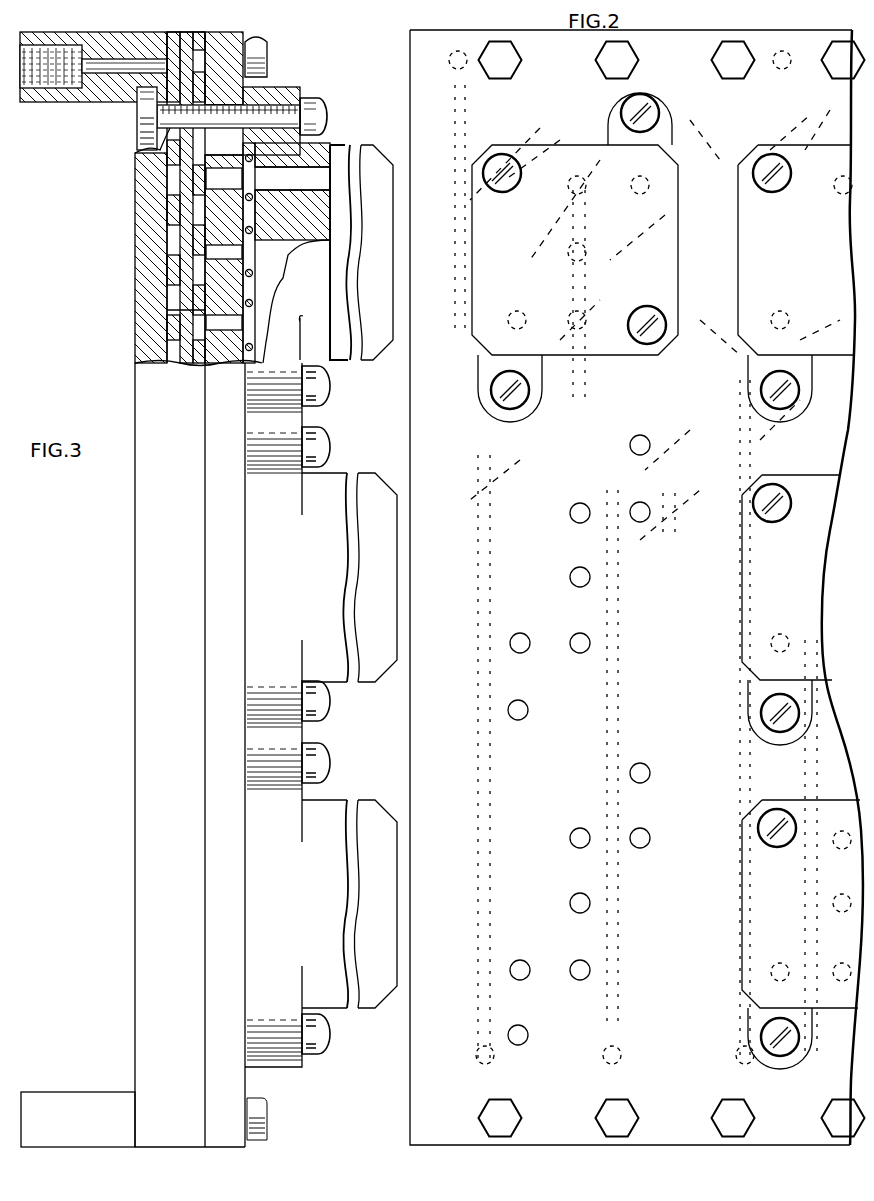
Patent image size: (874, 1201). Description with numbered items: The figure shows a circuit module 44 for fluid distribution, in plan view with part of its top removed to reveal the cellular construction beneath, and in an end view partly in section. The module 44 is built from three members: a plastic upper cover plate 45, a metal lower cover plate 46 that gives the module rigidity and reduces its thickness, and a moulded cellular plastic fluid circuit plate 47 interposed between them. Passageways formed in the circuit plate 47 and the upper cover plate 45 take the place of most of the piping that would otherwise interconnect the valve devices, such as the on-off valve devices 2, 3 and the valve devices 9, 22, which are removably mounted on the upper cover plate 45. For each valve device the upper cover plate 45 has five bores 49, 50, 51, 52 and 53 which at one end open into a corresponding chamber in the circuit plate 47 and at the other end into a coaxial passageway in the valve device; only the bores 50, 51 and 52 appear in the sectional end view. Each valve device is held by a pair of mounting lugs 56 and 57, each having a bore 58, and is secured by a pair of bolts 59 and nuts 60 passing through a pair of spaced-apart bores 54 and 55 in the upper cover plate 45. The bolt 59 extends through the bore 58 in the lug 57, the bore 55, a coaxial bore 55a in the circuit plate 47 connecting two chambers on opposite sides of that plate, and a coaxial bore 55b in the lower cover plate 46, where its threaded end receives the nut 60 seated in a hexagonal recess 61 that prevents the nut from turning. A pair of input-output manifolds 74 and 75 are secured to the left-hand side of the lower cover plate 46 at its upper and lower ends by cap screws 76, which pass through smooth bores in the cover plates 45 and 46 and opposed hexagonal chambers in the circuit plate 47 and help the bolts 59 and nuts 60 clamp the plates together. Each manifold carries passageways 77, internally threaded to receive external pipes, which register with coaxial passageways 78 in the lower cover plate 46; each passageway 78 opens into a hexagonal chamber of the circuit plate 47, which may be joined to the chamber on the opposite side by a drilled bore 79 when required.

In FIG. 3, the on-off valve device 2 is at (362, 150).
In FIG. 2, the on-off valve device 2 is at (682, 236).
In FIG. 2, the on-off valve device 3 is at (736, 272).
In FIG. 3, the valve device 9 is at (358, 478).
In FIG. 2, the valve device 9 is at (740, 597).
In FIG. 3, the valve device 22 is at (362, 808).
In FIG. 2, the valve device 22 is at (740, 913).
In FIG. 3, the circuit module 44 is at (184, 594).
In FIG. 2, the circuit module 44 is at (646, 417).
In FIG. 3, the upper cover plate 45 is at (240, 42).
In FIG. 2, the upper cover plate 45 is at (410, 48).
In FIG. 3, the lower cover plate 46 is at (145, 283).
In FIG. 3, the fluid circuit plate 47 is at (182, 318).
In FIG. 2, the bore 49 is at (513, 637).
In FIG. 3, the bore 50 is at (222, 335).
In FIG. 2, the bore 50 is at (572, 637).
In FIG. 3, the bore 51 is at (236, 268).
In FIG. 2, the bore 51 is at (570, 577).
In FIG. 3, the bore 52 is at (222, 193).
In FIG. 2, the bore 52 is at (575, 506).
In FIG. 2, the bore 53 is at (633, 506).
In FIG. 2, the mounting bore 54 is at (522, 704).
In FIG. 3, the mounting bore 55 is at (255, 100).
In FIG. 2, the mounting bore 55 is at (632, 448).
In FIG. 3, the coaxial bore 55a is at (162, 140).
In FIG. 3, the coaxial bore 55b is at (138, 108).
In FIG. 2, the mounting lug 56 is at (480, 385).
In FIG. 3, the mounting lug 57 is at (290, 100).
In FIG. 2, the mounting lug 57 is at (672, 125).
In FIG. 3, the bore 58 is at (268, 103).
In FIG. 3, the bolt 59 is at (322, 112).
In FIG. 2, the bolt 59 is at (625, 110).
In FIG. 3, the nut 60 is at (140, 122).
In FIG. 3, the hexagonal recess 61 is at (140, 140).
In FIG. 3, the input-output manifold 74 is at (52, 42).
In FIG. 3, the input-output manifold 75 is at (80, 1090).
In FIG. 3, the cap screw 76 is at (258, 42).
In FIG. 2, the cap screw 76 is at (600, 55).
In FIG. 3, the passageway 77 is at (96, 44).
In FIG. 3, the passageway 78 is at (142, 40).
In FIG. 3, the bore 79 is at (186, 44).